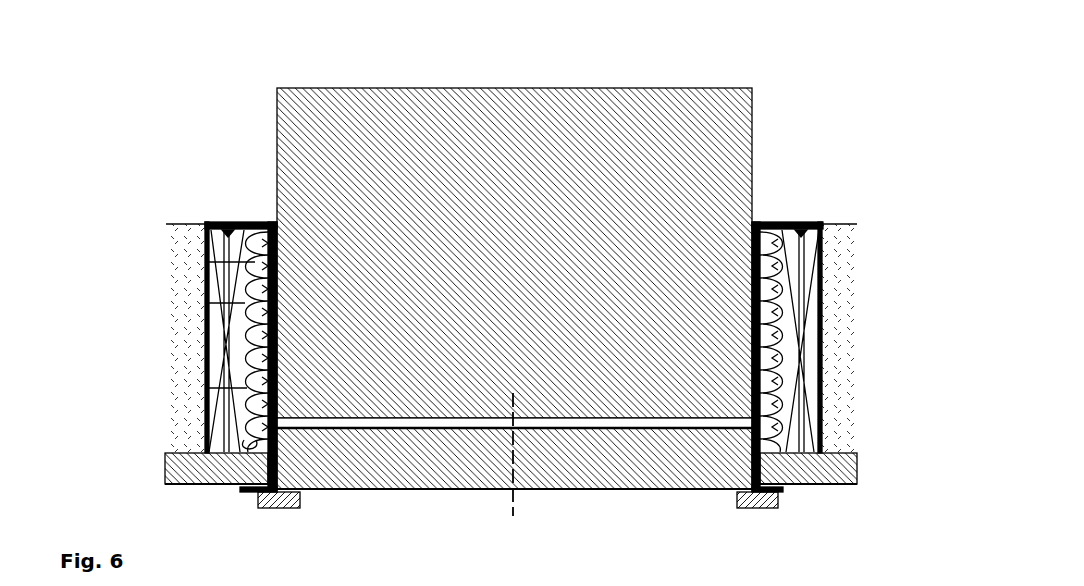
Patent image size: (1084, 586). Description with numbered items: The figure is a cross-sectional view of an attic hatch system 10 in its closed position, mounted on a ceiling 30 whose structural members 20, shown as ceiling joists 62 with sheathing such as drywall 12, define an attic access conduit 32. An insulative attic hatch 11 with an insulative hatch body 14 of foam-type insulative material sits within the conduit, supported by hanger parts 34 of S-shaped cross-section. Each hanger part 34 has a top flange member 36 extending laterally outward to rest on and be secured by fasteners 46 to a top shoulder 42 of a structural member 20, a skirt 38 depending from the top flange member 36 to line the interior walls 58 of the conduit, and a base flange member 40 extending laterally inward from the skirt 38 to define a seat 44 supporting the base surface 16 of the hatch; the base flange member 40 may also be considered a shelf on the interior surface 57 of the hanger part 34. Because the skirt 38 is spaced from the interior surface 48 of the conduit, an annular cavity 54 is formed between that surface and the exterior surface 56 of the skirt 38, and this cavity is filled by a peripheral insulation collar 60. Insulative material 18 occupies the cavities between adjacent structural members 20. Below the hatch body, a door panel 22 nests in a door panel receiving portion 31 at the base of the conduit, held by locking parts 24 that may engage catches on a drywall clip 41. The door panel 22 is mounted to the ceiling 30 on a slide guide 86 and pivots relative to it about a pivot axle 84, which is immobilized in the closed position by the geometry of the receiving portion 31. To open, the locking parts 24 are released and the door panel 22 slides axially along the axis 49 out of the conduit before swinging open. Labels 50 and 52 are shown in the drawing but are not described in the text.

The attic hatch system 10 is at (134, 108).
The insulative attic hatch 11 is at (257, 68).
The drywall 12 is at (168, 458).
The insulative hatch body 14 is at (573, 113).
The base surface 16 is at (593, 430).
The insulative material 18 is at (175, 225).
The structural member 20 is at (197, 327).
The door panel 22 is at (688, 472).
The locking part 24 is at (283, 509).
The ceiling 30 is at (172, 486).
The door panel receiving portion 31 is at (752, 450).
The attic access conduit 32 is at (185, 388).
The hanger part 34 is at (762, 222).
The top flange member 36 is at (785, 222).
The skirt 38 is at (780, 307).
The base flange member 40 is at (762, 368).
The drywall clip 41 is at (253, 492).
The top shoulder 42 is at (862, 240).
The seat 44 is at (762, 387).
The fastener 46 is at (213, 223).
The interior surface 48 is at (245, 303).
The axis 49 is at (513, 493).
The channel wall 50 is at (776, 222).
The spring coil 52 is at (762, 340).
The annular cavity 54 is at (263, 400).
The exterior surface 56 is at (210, 262).
The interior surface 57 is at (278, 286).
The interior wall 58 is at (256, 340).
The peripheral insulation collar 60 is at (221, 224).
The ceiling joist 62 is at (803, 422).
The pivot axle 84 is at (283, 428).
The slide guide 86 is at (277, 434).